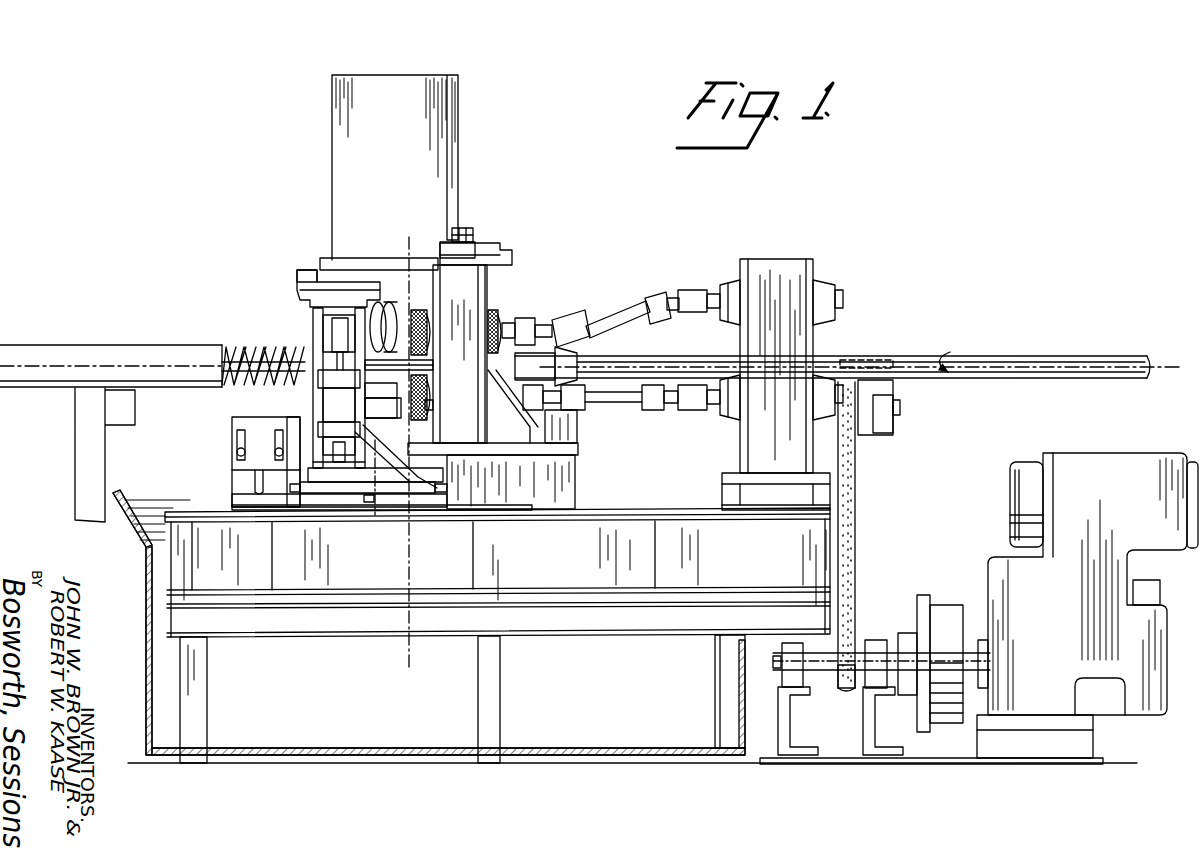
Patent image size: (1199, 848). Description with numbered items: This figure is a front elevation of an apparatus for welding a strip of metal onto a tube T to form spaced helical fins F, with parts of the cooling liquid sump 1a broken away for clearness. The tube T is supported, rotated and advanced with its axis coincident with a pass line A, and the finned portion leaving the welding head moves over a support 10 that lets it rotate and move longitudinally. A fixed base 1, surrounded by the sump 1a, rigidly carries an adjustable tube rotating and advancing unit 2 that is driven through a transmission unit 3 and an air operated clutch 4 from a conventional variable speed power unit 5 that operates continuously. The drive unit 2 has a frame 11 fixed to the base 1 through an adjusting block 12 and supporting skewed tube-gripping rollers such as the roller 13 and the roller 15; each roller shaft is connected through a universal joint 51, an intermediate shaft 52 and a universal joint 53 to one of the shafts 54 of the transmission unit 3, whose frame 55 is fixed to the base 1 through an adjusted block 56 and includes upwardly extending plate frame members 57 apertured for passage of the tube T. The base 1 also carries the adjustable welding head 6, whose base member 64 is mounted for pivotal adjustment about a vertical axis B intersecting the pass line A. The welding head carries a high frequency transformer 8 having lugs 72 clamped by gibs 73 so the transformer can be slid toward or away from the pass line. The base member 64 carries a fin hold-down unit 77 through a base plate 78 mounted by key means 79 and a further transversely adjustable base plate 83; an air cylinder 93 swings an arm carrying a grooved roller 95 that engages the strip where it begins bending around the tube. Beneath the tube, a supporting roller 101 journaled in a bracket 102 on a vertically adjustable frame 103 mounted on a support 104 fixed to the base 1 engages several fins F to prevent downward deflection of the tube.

The fixed base 1 is at (632, 635).
The sump 1a is at (140, 505).
The tube rotating and advancing unit 2 is at (508, 384).
The transmission unit 3 is at (775, 258).
The air operated clutch 4 is at (928, 596).
The variable speed power unit 5 is at (1128, 452).
The welding head 6 is at (330, 244).
The transformer 8 is at (462, 132).
The support 10 is at (160, 348).
The frame 11 is at (505, 262).
The adjusting block 12 is at (568, 488).
The roller 13 is at (430, 408).
The roller 15 is at (421, 308).
The universal joint 51 is at (560, 318).
The intermediate shaft 52 is at (605, 308).
The universal joint 53 is at (660, 290).
The shaft 54 is at (712, 286).
The frame 55 is at (820, 455).
The adjusted block 56 is at (722, 492).
The plate frame member 57 is at (740, 343).
The base member 64 is at (345, 510).
The lug 72 is at (312, 284).
The gib 73 is at (297, 274).
The fin hold-down unit 77 is at (313, 411).
The base plate 78 is at (318, 495).
The key means 79 is at (367, 500).
The base plate 83 is at (440, 494).
The air cylinder 93 is at (333, 408).
The grooved roller 95 is at (398, 305).
The supporting roller 101 is at (385, 390).
The bracket 102 is at (393, 400).
The frame 103 is at (385, 438).
The support 104 is at (248, 508).
The pass line A is at (40, 347).
The tube T is at (236, 348).
The helical fins F is at (292, 348).
The axis B is at (373, 520).